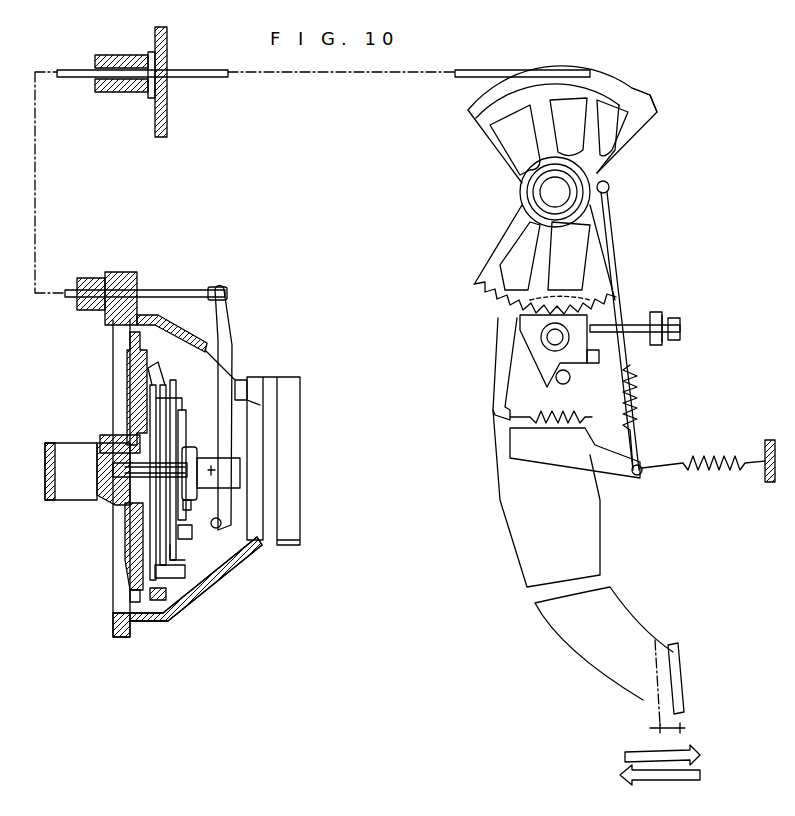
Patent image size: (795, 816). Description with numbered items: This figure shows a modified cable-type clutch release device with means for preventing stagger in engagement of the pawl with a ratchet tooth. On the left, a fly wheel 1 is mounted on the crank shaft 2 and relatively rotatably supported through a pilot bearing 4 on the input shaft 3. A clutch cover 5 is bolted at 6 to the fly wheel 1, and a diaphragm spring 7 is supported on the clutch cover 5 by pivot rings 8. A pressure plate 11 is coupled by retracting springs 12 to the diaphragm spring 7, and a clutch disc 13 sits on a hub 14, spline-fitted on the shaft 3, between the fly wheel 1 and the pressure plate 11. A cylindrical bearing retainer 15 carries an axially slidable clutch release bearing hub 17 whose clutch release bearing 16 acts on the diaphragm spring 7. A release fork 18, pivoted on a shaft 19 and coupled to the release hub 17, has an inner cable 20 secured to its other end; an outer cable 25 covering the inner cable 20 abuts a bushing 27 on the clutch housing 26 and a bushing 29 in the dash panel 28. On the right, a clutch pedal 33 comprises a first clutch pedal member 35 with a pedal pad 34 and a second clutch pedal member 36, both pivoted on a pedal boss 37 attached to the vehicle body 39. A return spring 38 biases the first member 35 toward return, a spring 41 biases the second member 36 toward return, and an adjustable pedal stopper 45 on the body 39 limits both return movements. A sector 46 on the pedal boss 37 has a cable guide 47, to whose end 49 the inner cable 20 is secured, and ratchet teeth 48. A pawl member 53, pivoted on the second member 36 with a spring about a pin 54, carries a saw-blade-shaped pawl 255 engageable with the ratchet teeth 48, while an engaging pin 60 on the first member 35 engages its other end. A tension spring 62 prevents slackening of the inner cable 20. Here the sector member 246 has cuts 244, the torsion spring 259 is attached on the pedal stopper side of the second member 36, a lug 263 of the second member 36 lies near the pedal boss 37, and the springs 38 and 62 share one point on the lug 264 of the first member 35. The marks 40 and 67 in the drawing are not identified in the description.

The fly wheel 1 is at (125, 368).
The crank shaft 2 is at (71, 451).
The input shaft 3 is at (128, 522).
The pilot bearing 4 is at (115, 503).
The clutch cover 5 is at (168, 573).
The bolt 6 is at (165, 588).
The diaphragm spring 7 is at (183, 413).
The pivot rings 8 is at (183, 548).
The pressure plate 11 is at (166, 385).
The retracting springs 12 is at (179, 394).
The clutch disc 13 is at (126, 394).
The hub 14 is at (178, 458).
The bearing retainer 15 is at (240, 488).
The clutch release bearing 16 is at (196, 511).
The clutch release bearing hub 17 is at (190, 530).
The release fork 18 is at (232, 333).
The shaft 19 is at (221, 526).
The inner cable 20 is at (80, 70).
The outer cable 25 is at (113, 95).
The clutch housing 26 is at (185, 340).
The bushing 27 is at (107, 312).
The dash panel 28 is at (167, 115).
The bushing 29 is at (151, 98).
The clutch pedal 33 is at (609, 536).
The pedal pad 34 is at (680, 650).
The first clutch pedal member 35 is at (600, 572).
The second clutch pedal member 36 is at (515, 345).
The pedal boss 37 is at (600, 176).
The return spring 38 is at (720, 472).
The vehicle body 39 is at (660, 315).
The arrow direction 40 is at (690, 768).
The spring 41 is at (556, 430).
The pedal stopper 45 is at (635, 335).
The sector 46 is at (610, 250).
The cable guide 47 is at (554, 183).
The ratchet teeth 48 is at (482, 300).
The end of cable guide 49 is at (660, 113).
The pawl member 53 is at (520, 355).
The pin 54 is at (560, 322).
The engaging pin 60 is at (563, 385).
The tension spring 62 is at (640, 412).
The arrow direction 67 is at (632, 745).
The cuts 244 is at (585, 110).
The sector member 246 is at (613, 125).
The pawl 255 is at (531, 298).
The torsion spring 259 is at (600, 365).
The lug 263 is at (610, 186).
The lug 264 is at (612, 470).